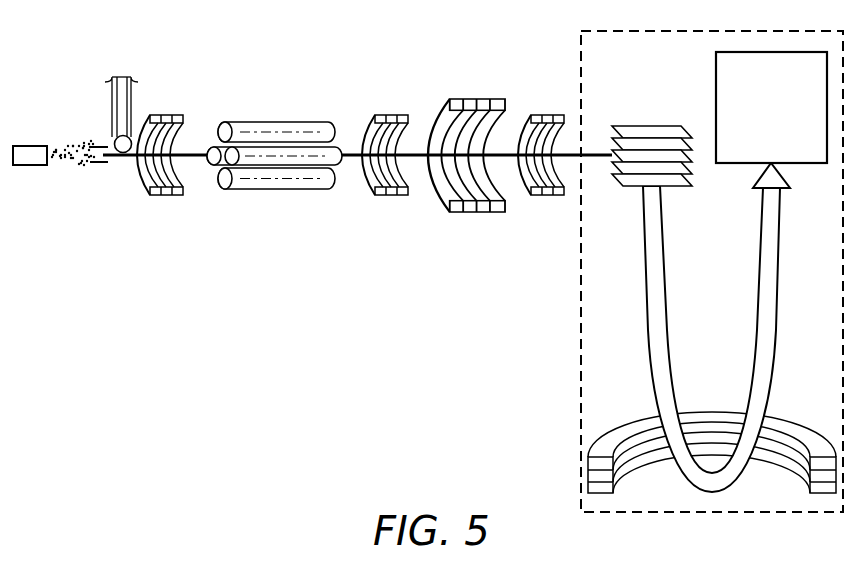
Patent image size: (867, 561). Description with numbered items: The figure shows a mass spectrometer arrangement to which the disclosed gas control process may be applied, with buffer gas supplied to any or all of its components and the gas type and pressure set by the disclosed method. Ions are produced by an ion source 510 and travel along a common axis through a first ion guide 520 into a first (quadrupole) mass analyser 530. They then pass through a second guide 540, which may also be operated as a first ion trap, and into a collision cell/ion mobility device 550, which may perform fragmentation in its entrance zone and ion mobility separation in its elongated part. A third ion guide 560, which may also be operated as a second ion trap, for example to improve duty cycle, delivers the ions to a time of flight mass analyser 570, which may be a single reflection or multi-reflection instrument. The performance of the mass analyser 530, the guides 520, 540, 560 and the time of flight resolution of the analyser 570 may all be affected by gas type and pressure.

The ion source 510 is at (42, 193).
The first ion guide 520 is at (153, 218).
The first (quadrupole) mass analyser 530 is at (250, 211).
The second guide 540 is at (375, 218).
The collision cell/ion mobility device 550 is at (461, 229).
The third ion guide 560 is at (540, 220).
The time of flight mass analyser 570 is at (554, 406).